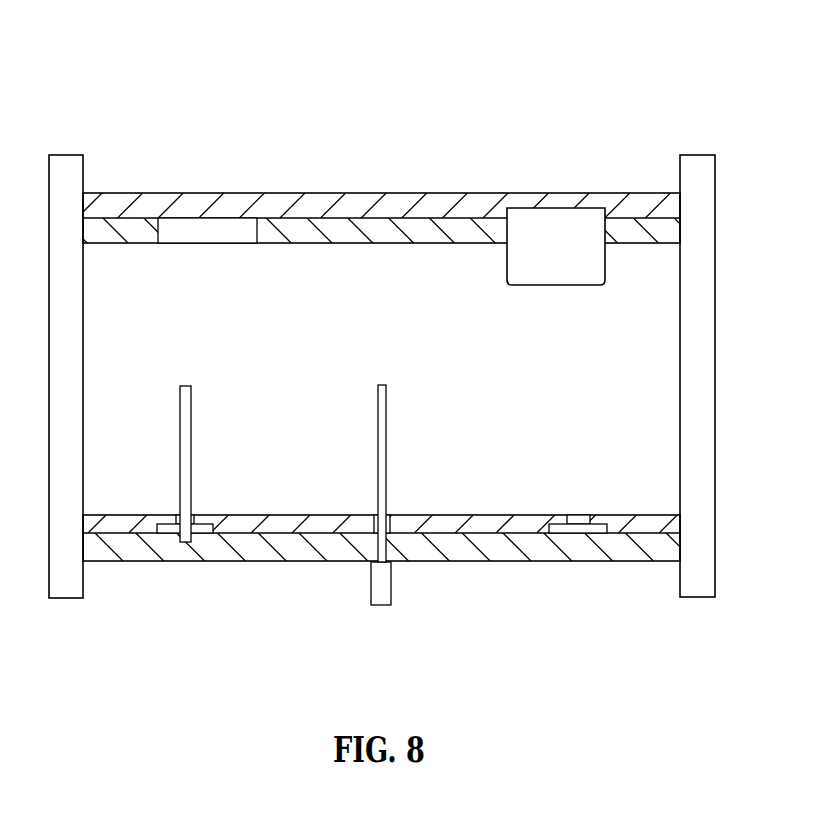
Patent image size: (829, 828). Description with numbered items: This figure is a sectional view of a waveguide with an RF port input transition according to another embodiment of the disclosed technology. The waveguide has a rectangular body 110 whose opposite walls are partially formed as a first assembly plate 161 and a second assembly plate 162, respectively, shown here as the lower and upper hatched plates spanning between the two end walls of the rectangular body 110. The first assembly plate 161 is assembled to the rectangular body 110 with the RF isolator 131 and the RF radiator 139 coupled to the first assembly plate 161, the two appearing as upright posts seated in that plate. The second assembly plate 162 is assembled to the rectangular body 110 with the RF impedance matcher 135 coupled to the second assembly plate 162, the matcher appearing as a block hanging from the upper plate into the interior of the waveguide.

The rectangular body 110 is at (387, 158).
The second assembly plate 162 is at (232, 200).
The first assembly plate 161 is at (543, 553).
The RF impedance matcher 135 is at (565, 220).
The RF isolator 131 is at (185, 545).
The RF radiator 139 is at (382, 598).